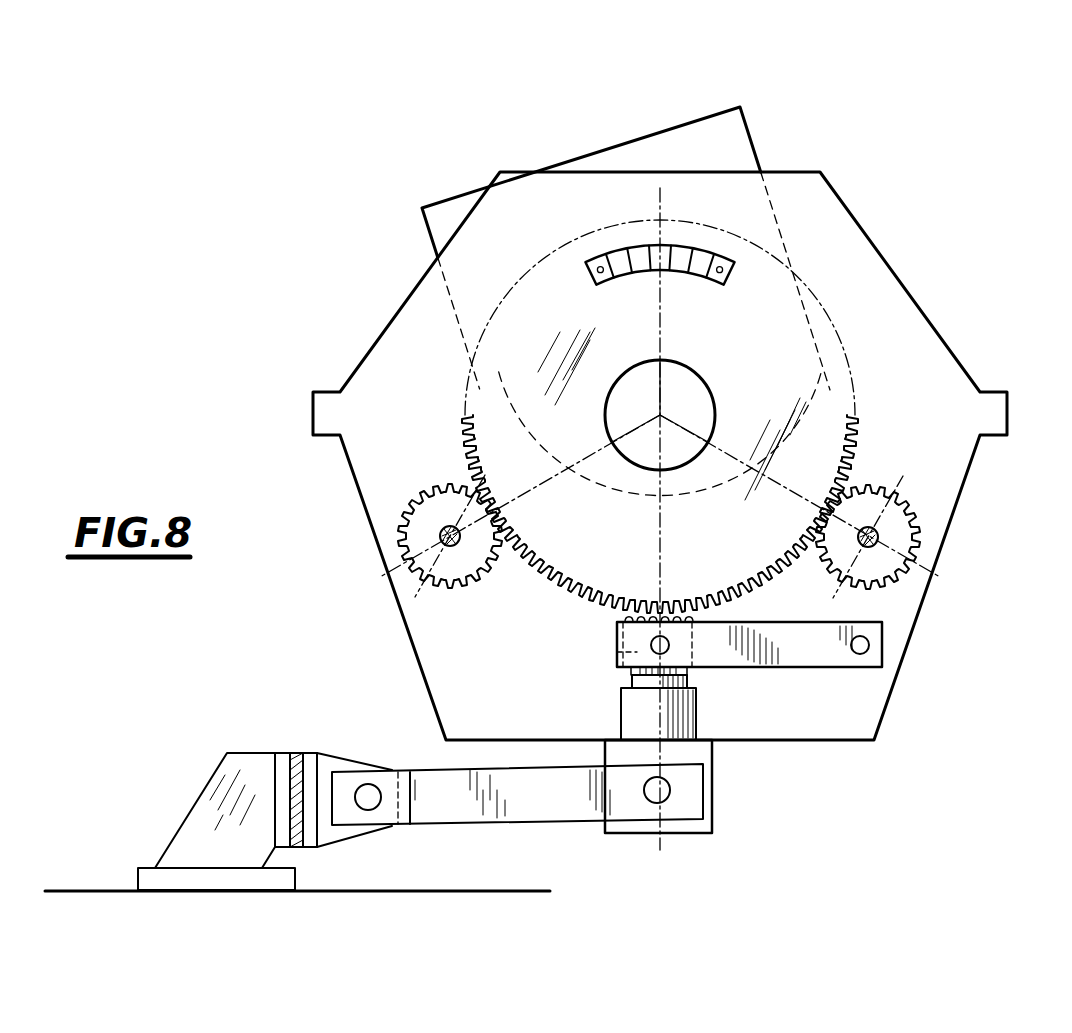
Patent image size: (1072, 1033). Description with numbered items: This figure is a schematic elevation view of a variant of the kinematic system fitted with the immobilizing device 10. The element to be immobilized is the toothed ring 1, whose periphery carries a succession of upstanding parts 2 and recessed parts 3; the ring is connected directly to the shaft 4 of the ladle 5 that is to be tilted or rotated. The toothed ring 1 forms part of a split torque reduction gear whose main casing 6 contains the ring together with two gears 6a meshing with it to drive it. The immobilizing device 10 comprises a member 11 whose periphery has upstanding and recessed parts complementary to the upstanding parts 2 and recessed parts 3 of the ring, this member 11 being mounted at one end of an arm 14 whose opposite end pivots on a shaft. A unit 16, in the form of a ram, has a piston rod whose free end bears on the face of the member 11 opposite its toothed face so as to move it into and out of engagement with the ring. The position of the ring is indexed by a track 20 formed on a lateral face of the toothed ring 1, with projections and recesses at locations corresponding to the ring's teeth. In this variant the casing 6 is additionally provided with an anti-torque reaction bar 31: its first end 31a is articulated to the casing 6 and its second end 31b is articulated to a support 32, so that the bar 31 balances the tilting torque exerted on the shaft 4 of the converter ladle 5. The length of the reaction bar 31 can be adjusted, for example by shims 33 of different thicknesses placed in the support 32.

The toothed ring 1 is at (836, 420).
The upstanding parts 2 is at (548, 575).
The recessed parts 3 is at (586, 605).
The shaft 4 is at (680, 397).
The ladle 5 is at (700, 147).
The main casing 6 is at (912, 630).
The gears 6a is at (423, 536).
The immobilizing device 10 is at (733, 672).
The member 11 is at (613, 658).
The arm 14 is at (807, 655).
The unit for moving the member 16 is at (637, 723).
The track 20 is at (717, 245).
The anti-torque reaction bar 31 is at (553, 812).
The first end 31a is at (687, 802).
The second end 31b is at (388, 813).
The support 32 is at (203, 830).
The shims 33 is at (297, 770).